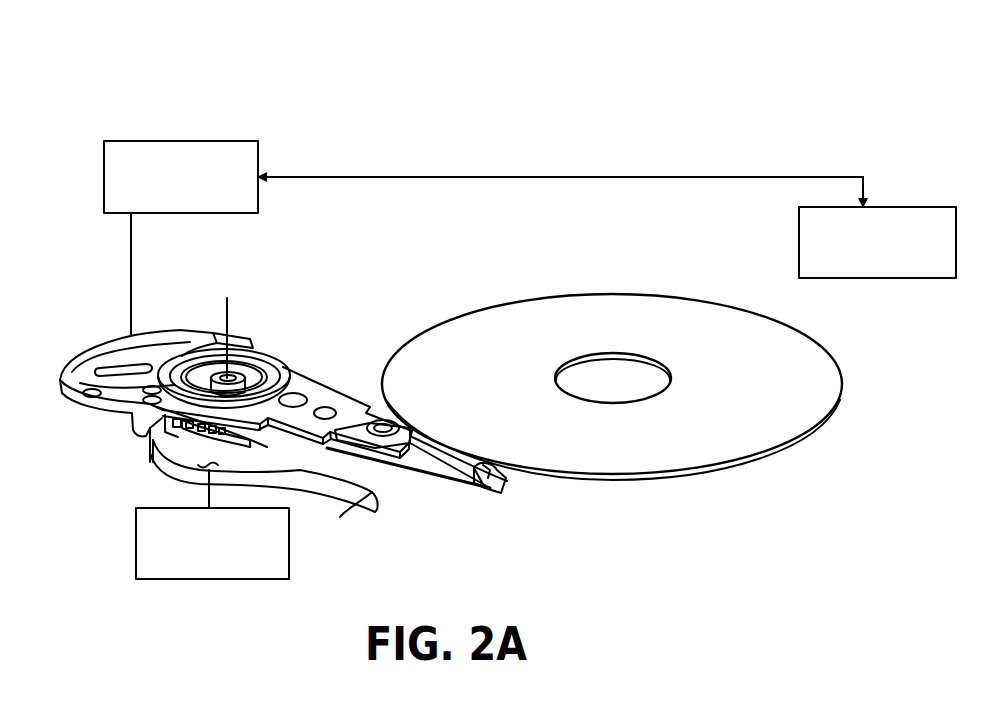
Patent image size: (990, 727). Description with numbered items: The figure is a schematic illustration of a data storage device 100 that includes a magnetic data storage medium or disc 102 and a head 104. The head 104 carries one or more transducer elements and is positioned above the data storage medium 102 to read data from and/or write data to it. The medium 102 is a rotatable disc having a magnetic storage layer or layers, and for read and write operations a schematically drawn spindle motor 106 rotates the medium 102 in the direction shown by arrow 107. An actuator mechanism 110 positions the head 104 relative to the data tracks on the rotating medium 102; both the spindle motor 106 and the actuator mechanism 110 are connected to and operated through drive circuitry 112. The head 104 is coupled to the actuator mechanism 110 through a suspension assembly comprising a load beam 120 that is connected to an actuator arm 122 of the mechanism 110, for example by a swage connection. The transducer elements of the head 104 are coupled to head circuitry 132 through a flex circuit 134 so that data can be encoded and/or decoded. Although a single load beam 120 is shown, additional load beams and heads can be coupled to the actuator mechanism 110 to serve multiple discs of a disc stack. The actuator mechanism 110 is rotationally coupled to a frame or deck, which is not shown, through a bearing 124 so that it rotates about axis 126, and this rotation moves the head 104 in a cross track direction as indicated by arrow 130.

The data storage device 100 is at (752, 138).
The data storage medium 102 is at (712, 336).
The head 104 is at (510, 487).
The spindle motor 106 is at (917, 207).
The arrow 107 is at (474, 349).
The actuator mechanism 110 is at (247, 335).
The drive circuitry 112 is at (227, 141).
The load beam 120 is at (412, 447).
The actuator arm 122 is at (335, 381).
The bearing 124 is at (222, 374).
The axis 126 is at (222, 317).
The arrow 130 is at (472, 516).
The head circuitry 132 is at (136, 541).
The flex circuit 134 is at (272, 478).